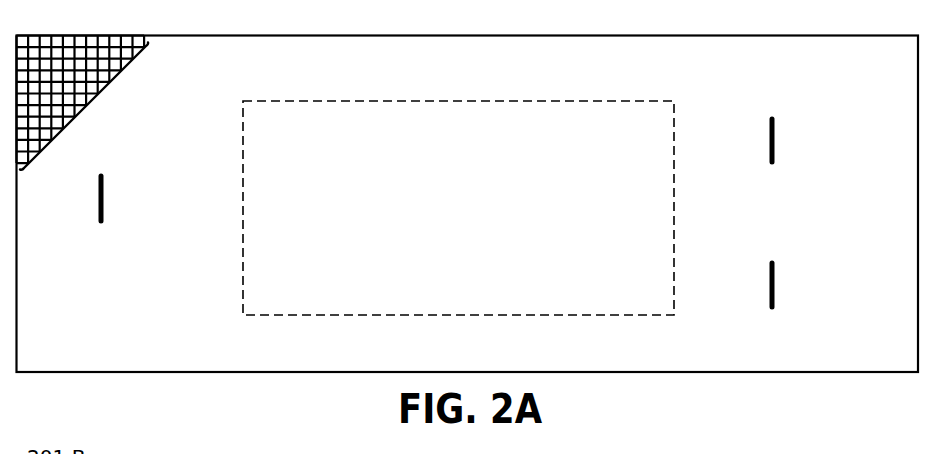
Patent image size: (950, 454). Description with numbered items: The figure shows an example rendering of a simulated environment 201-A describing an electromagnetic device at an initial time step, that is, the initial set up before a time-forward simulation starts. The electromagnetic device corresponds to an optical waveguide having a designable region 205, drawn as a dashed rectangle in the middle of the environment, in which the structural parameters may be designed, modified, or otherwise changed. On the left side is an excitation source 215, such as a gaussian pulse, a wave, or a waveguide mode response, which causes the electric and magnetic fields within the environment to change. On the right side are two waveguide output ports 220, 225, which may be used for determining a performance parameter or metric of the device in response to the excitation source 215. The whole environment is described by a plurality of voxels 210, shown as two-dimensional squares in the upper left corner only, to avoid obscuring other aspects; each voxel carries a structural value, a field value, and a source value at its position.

The simulated environment 201-A is at (92, 26).
The designable region 205 is at (458, 190).
The plurality of voxels 210 is at (89, 107).
The excitation source 215 is at (100, 228).
The waveguide output port 220 is at (771, 170).
The waveguide output port 225 is at (771, 314).